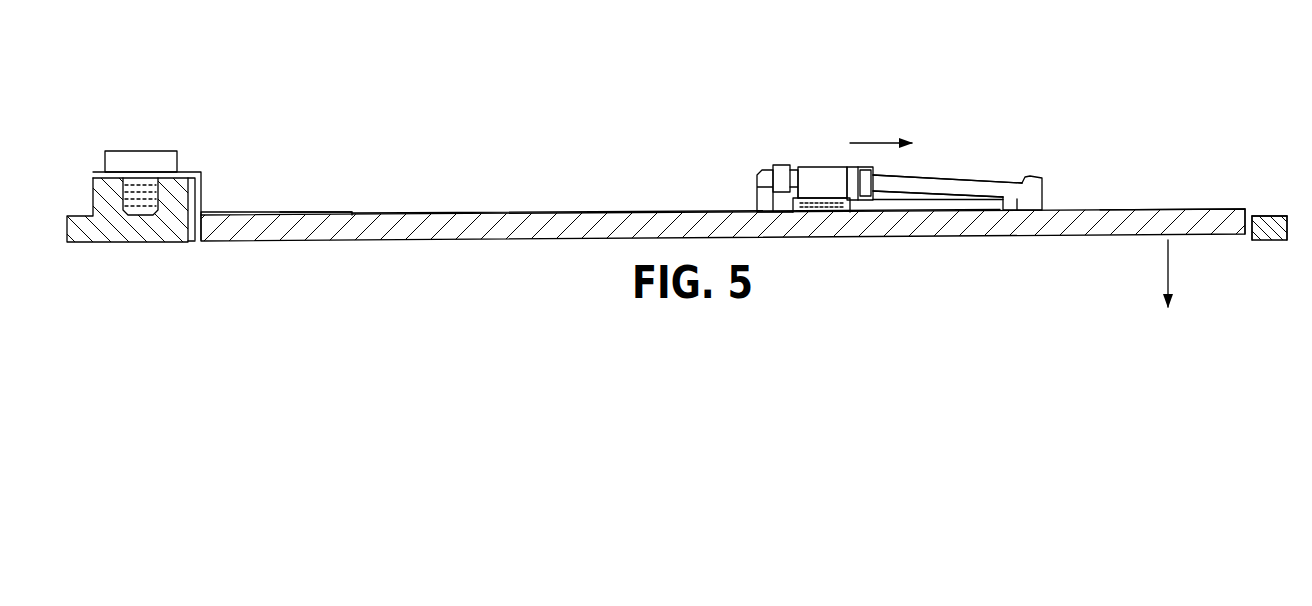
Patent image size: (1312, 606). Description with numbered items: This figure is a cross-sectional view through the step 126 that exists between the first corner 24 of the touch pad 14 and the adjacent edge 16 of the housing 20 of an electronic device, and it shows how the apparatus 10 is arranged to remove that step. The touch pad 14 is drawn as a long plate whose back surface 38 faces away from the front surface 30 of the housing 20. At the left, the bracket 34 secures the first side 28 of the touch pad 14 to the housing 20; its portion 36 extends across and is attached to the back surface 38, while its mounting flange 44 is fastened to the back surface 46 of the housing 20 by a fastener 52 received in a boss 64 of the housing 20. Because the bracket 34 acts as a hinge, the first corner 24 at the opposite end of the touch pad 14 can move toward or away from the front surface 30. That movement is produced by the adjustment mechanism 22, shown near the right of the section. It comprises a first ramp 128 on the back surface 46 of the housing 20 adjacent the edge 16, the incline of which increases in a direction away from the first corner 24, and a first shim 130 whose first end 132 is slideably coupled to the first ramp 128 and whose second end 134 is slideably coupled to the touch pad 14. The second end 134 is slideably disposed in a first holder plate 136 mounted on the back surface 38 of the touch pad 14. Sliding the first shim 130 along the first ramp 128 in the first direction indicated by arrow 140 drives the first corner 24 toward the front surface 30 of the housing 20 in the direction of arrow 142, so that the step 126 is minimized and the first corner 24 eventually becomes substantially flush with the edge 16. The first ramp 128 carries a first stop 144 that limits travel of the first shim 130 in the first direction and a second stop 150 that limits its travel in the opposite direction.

The apparatus 10 is at (916, 90).
The touch pad 14 is at (493, 228).
The edge 16 is at (1250, 234).
The housing 20 is at (1264, 241).
The adjustment mechanism 22 is at (988, 170).
The first corner 24 is at (1226, 208).
The first side 28 is at (193, 242).
The front surface 30 is at (1280, 241).
The bracket 34 is at (314, 208).
The portion 36 is at (255, 212).
The back surface 38 is at (500, 213).
The mounting flange 44 is at (189, 172).
The back surface 46 is at (1273, 216).
The fastener 52 is at (141, 150).
The boss 64 is at (93, 198).
The step 126 is at (1251, 216).
The first ramp 128 is at (927, 175).
The first shim 130 is at (823, 166).
The first end 132 is at (778, 163).
The second end 134 is at (862, 210).
The first holder plate 136 is at (960, 204).
The arrow 140 is at (881, 141).
The arrow 142 is at (1167, 272).
The first stop 144 is at (1043, 178).
The second stop 150 is at (759, 171).